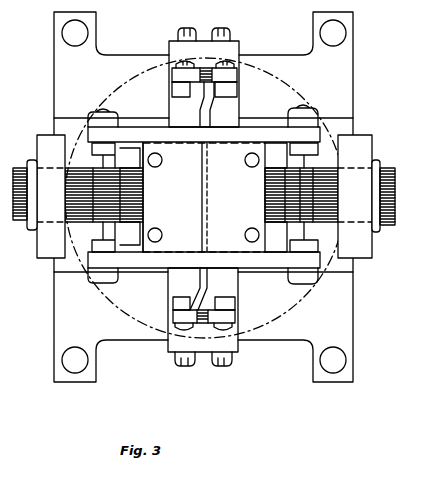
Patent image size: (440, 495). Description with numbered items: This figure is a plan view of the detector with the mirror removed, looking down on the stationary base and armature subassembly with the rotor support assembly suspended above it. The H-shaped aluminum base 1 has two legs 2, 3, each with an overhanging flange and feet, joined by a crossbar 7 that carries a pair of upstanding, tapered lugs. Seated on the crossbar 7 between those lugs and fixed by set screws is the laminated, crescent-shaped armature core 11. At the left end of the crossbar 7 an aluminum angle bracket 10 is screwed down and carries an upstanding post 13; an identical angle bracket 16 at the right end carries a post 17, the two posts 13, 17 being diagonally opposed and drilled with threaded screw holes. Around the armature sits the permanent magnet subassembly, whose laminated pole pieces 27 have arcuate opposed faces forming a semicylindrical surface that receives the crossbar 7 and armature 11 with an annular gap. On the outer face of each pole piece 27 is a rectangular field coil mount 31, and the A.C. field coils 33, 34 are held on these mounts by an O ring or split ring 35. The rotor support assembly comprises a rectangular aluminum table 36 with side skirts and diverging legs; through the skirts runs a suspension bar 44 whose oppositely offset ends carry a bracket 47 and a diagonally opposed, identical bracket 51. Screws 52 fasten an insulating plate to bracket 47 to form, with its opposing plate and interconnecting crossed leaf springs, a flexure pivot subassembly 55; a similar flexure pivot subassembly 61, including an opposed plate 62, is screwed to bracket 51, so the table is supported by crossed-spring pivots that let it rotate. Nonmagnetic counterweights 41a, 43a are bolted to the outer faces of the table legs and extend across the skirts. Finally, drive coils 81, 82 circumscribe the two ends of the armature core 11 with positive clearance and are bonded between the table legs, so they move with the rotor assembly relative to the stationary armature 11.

The base 1 is at (47, 81).
The leg 2 is at (288, 330).
The leg 3 is at (283, 63).
The crossbar 7 is at (190, 113).
The angle bracket 10 is at (170, 347).
The armature core 11 is at (278, 195).
The post 13 is at (236, 304).
The angle bracket 16 is at (169, 46).
The post 17 is at (178, 91).
The pole piece 27 is at (73, 217).
The field coil mount 31 is at (397, 193).
The A.C. field coil 33 is at (363, 142).
The A.C. field coil 34 is at (42, 149).
The O ring 35 is at (33, 226).
The table 36 is at (190, 193).
The counterweight 41a is at (238, 258).
The counterweight 43a is at (218, 136).
The suspension bar 44 is at (206, 280).
The bracket 47 is at (172, 302).
The bracket 51 is at (237, 87).
The screws 52 is at (238, 48).
The flexure pivot subassembly 55 is at (208, 336).
The flexure pivot subassembly 61 is at (206, 55).
The plate 62 is at (173, 76).
The drive coil 81 is at (127, 229).
The drive coil 82 is at (297, 154).